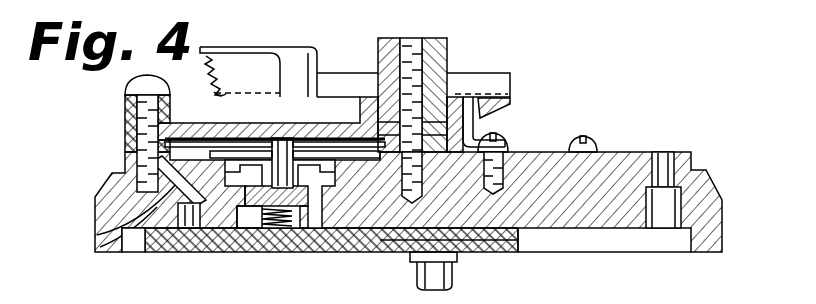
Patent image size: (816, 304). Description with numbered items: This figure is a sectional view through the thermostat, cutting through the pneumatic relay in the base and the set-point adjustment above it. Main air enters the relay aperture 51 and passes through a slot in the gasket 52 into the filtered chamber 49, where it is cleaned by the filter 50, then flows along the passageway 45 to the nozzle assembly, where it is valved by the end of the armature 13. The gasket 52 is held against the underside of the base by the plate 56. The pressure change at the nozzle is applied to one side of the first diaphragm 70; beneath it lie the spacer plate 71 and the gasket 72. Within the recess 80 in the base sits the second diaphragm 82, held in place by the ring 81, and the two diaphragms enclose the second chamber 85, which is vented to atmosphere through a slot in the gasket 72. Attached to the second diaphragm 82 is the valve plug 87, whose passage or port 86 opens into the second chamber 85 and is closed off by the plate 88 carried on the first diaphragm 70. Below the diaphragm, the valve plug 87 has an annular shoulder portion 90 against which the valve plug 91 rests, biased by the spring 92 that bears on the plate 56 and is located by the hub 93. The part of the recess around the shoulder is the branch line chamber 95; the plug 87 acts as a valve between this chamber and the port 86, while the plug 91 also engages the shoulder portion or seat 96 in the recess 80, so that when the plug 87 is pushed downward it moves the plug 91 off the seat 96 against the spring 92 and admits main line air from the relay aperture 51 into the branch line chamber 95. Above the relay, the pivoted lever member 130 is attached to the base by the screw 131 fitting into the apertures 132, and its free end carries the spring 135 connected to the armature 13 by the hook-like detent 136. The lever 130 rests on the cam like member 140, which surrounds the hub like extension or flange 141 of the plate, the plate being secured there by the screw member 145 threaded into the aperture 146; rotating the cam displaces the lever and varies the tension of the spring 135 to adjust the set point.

The armature 13 is at (345, 72).
The passageway 45 is at (133, 160).
The filtered chamber 49 is at (160, 242).
The filter 50 is at (175, 232).
The relay aperture 51 is at (250, 238).
The gasket 52 is at (325, 233).
The plate 56 is at (342, 237).
The first diaphragm 70 is at (176, 134).
The spacer plate 71 is at (125, 143).
The gasket 72 is at (125, 150).
The recess 80 is at (96, 199).
The ring 81 is at (96, 218).
The second diaphragm 82 is at (96, 240).
The second chamber 85 is at (206, 142).
The passage or port 86 is at (279, 152).
The valve plug 87 is at (303, 152).
The plate 88 is at (250, 145).
The annular shoulder portion 90 is at (290, 219).
The valve plug 91 is at (268, 232).
The spring 92 is at (241, 230).
The hub 93 is at (274, 233).
The branch line chamber 95 is at (200, 230).
The shoulder portion or seat 96 is at (235, 237).
The pivoted lever member 130 is at (312, 62).
The screw 131 is at (490, 140).
The apertures 132 is at (522, 150).
The spring 135 is at (214, 62).
The hook-like detent 136 is at (221, 94).
The cam like member 140 is at (450, 110).
The hub like extension or flange 141 is at (427, 70).
The screw member 145 is at (407, 58).
The aperture 146 is at (473, 128).